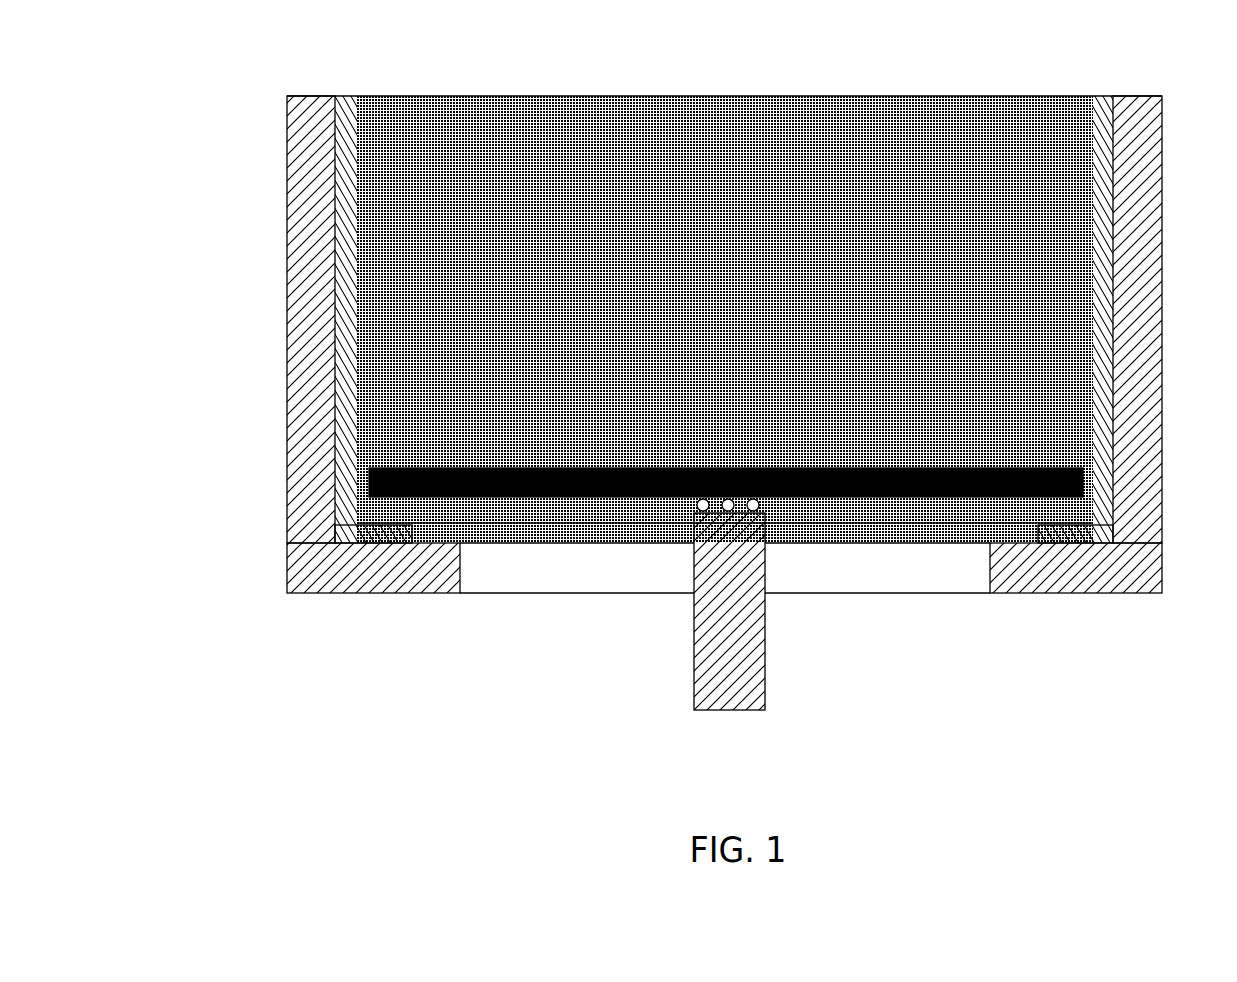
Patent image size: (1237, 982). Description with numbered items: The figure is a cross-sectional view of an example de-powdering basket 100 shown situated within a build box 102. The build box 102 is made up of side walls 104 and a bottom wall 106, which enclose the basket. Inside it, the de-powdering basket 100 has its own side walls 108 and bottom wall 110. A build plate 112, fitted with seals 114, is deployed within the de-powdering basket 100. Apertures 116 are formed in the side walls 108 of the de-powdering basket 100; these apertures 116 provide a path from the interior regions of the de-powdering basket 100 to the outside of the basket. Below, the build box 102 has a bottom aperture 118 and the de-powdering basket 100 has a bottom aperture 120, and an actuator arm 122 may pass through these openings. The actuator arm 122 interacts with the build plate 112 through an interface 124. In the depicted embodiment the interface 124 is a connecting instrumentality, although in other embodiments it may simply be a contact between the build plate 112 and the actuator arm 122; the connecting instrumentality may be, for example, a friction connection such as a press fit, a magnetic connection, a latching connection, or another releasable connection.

The de-powdering basket 100 is at (610, 68).
The build box 102 is at (262, 278).
The side walls 104 is at (805, 122).
The bottom wall 106 is at (365, 583).
The side walls 108 is at (350, 98).
The bottom wall 110 is at (348, 532).
The build plate 112 is at (818, 468).
The seals 114 is at (358, 470).
The apertures 116 is at (345, 265).
The bottom aperture 118 is at (885, 573).
The bottom aperture 120 is at (613, 533).
The actuator arm 122 is at (718, 650).
The interface 124 is at (688, 505).